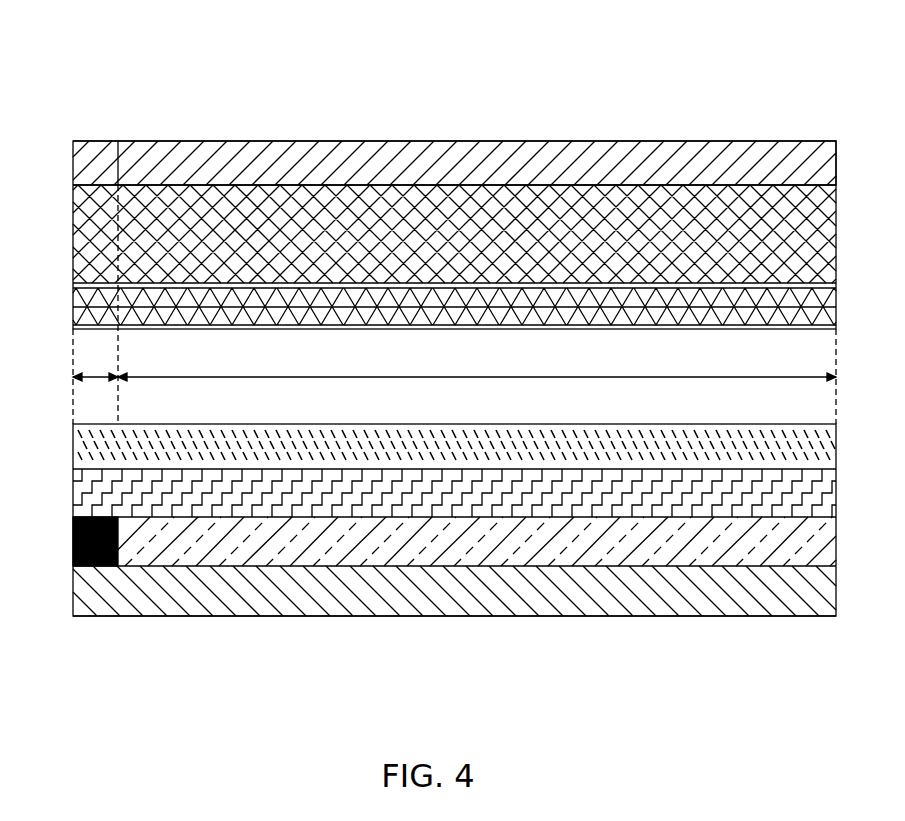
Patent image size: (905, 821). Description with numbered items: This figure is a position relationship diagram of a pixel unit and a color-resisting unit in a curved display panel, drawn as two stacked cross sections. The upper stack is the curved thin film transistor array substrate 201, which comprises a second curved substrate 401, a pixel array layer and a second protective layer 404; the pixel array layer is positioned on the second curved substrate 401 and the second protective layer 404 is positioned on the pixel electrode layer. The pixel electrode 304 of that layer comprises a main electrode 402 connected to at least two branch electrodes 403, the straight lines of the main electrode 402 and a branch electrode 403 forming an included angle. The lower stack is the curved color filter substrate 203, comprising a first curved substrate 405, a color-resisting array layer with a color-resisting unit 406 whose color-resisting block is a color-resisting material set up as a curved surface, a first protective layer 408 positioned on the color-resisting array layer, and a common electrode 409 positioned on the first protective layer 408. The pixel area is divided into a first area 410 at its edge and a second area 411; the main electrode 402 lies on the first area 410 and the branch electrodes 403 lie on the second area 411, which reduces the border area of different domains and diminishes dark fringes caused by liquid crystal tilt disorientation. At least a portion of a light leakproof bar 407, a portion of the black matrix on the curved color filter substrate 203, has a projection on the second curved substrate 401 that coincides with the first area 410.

The curved thin film transistor array substrate 201 is at (71, 329).
The curved color filter substrate 203 is at (73, 432).
The pixel electrode 304 is at (102, 66).
The second curved substrate 401 is at (330, 141).
The main electrode 402 is at (97, 185).
The branch electrodes 403 is at (205, 185).
The second protective layer 404 is at (640, 283).
The first curved substrate 405 is at (408, 616).
The color-resisting unit 406 is at (203, 566).
The light leakproof bar 407 is at (98, 566).
The first protective layer 408 is at (525, 517).
The common electrode 409 is at (725, 469).
The first area 410 is at (93, 379).
The second area 411 is at (434, 378).